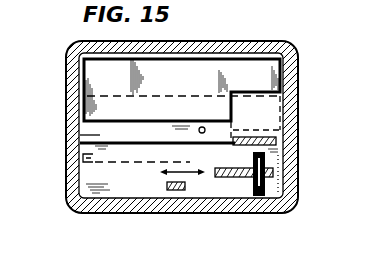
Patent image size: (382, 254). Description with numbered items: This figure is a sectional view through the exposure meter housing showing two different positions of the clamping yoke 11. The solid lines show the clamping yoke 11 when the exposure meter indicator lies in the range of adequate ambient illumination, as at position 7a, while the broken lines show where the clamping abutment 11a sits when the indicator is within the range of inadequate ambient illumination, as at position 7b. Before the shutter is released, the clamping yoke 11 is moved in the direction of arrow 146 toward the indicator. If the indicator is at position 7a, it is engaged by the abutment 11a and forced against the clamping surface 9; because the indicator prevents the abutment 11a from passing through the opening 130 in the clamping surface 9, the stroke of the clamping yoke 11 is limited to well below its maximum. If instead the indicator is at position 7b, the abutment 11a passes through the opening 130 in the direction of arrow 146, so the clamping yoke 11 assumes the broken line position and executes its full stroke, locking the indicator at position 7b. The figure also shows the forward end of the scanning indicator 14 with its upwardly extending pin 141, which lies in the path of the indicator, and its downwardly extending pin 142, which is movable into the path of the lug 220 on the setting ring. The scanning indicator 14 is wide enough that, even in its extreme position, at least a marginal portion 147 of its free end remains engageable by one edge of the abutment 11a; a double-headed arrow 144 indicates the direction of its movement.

The clamping yoke 11 is at (207, 67).
The abutment 11a is at (97, 107).
The indicator position in the range of adequate ambient illumination 7a is at (201, 127).
The indicator position in the range of inadequate ambient illumination 7b is at (250, 128).
The clamping surface 9 is at (287, 142).
The arrow 146 is at (104, 152).
The opening 130 is at (124, 146).
The sliding direction arrow 144 is at (190, 173).
The lug 220 is at (173, 190).
The scanning indicator 14 is at (246, 177).
The marginal portion 147 is at (248, 166).
The pin 141 is at (265, 158).
The pin 142 is at (264, 185).